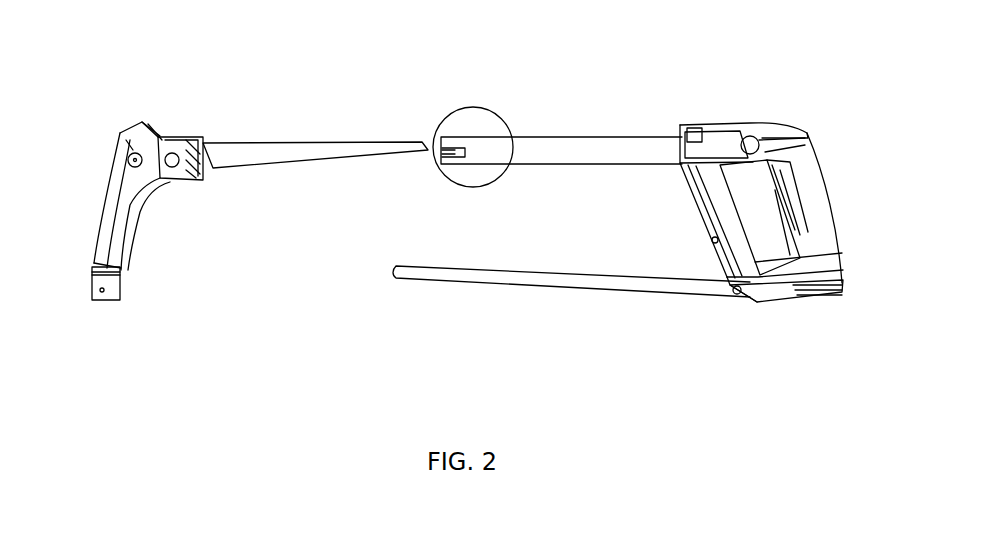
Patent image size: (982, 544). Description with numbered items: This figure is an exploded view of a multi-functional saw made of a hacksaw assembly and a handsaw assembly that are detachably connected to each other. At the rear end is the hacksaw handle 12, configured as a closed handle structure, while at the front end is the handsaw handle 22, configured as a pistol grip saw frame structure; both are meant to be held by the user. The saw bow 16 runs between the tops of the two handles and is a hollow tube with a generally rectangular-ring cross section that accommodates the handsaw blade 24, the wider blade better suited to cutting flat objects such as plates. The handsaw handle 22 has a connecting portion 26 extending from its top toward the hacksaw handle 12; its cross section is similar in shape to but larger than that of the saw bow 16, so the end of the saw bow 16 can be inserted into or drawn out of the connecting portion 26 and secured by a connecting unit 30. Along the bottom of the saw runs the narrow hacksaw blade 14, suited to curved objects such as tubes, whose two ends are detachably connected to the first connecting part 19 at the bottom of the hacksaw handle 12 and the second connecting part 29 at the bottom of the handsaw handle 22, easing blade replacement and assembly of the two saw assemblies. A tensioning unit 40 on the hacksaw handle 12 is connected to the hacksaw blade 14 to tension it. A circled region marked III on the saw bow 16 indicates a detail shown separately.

The hacksaw handle 12 is at (823, 193).
The hacksaw blade 14 is at (515, 280).
The saw bow 16 is at (577, 143).
The first connecting part 19 is at (750, 302).
The handsaw handle 22 is at (118, 205).
The handsaw blade 24 is at (232, 158).
The connecting portion 26 is at (184, 138).
The second connecting part 29 is at (122, 286).
The connecting unit 30 is at (160, 138).
The tensioning unit 40 is at (730, 120).
The detail view circle III is at (467, 120).